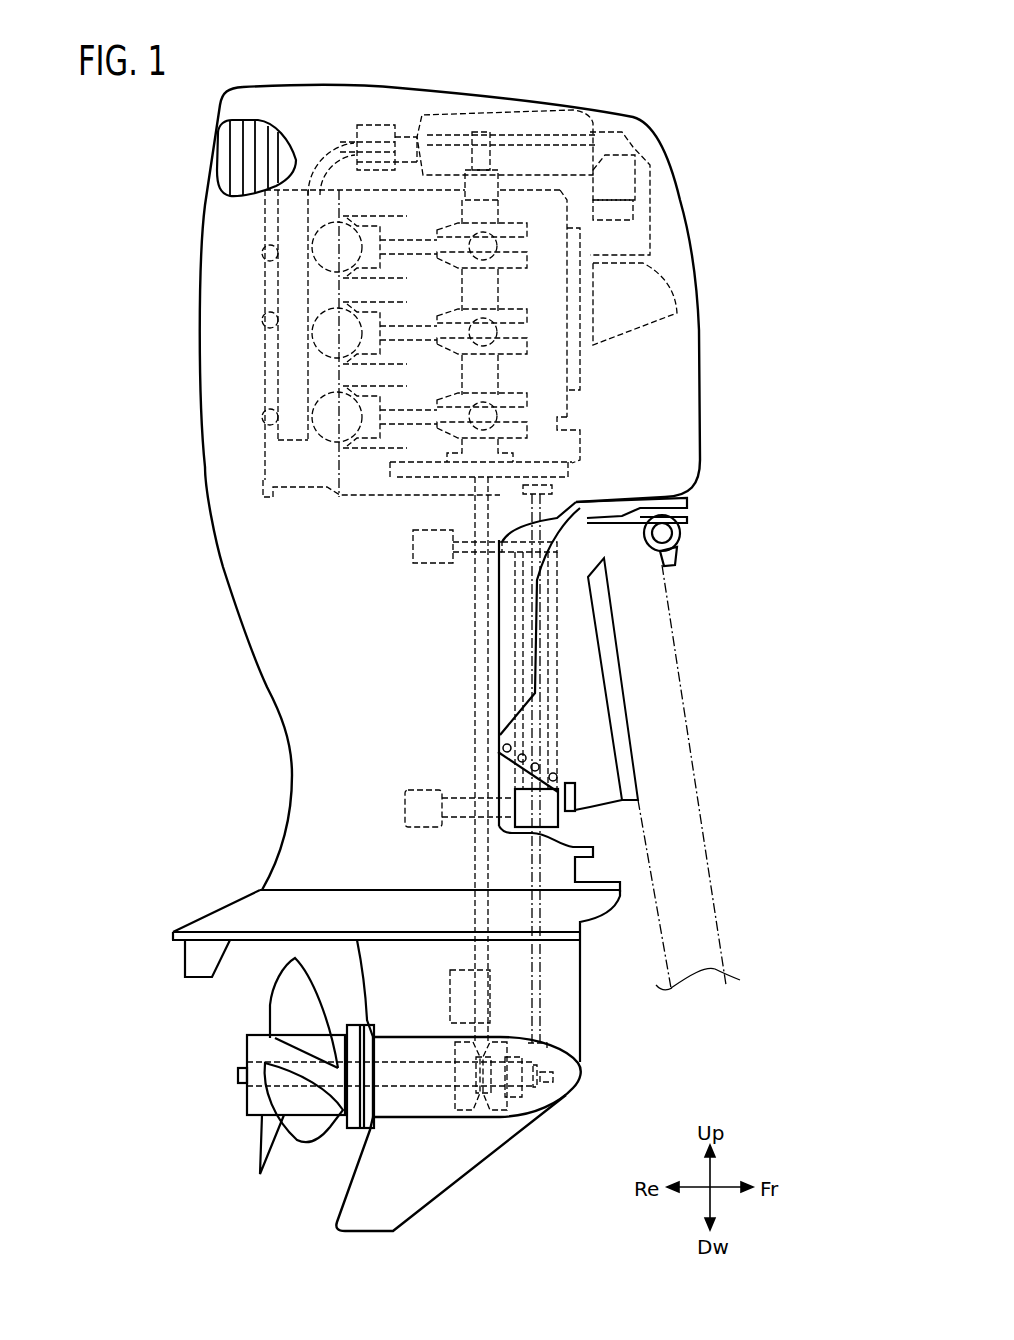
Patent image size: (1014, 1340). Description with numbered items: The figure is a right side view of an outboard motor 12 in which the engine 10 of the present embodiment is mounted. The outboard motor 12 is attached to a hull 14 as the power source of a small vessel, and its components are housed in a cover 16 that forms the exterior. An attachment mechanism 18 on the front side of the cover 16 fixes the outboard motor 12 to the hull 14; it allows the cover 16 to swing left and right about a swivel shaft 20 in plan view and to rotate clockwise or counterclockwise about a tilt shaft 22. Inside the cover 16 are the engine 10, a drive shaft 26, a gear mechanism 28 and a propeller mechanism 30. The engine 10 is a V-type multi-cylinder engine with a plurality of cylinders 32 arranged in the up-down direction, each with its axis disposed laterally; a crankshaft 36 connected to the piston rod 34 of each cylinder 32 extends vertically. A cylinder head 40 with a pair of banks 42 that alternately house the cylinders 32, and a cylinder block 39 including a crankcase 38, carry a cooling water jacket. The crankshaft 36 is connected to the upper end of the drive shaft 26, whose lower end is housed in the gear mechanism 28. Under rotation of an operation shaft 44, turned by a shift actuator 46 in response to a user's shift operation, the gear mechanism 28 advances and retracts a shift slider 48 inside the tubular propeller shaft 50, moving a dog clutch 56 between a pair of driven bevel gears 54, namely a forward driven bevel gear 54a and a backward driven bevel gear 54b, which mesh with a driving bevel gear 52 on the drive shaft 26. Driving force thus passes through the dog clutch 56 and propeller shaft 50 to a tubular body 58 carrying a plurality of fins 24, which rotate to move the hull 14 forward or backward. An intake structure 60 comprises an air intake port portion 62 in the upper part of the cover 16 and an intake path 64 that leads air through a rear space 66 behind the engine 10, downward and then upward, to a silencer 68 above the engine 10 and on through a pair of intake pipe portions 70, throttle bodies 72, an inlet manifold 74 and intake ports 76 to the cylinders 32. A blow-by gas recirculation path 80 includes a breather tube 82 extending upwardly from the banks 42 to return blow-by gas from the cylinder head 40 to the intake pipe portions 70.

The engine 10 is at (430, 487).
The outboard motor 12 is at (659, 65).
The hull 14 is at (711, 870).
The cover 16 is at (174, 195).
The attachment mechanism 18 is at (669, 535).
The swivel shaft 20 is at (560, 698).
The tilt shaft 22 is at (677, 552).
The fins 24 is at (263, 1150).
The drive shaft 26 is at (480, 603).
The gear mechanism 28 is at (516, 1132).
The propeller mechanism 30 is at (283, 1096).
The cylinders 32 is at (306, 228).
The piston rod 34 is at (390, 243).
The crankshaft 36 is at (541, 405).
The crankcase 38 is at (382, 541).
The cylinder block 39 is at (383, 498).
The cylinder head 40 is at (317, 498).
The banks 42 is at (322, 541).
The operation shaft 44 is at (543, 912).
The shift actuator 46 is at (556, 521).
The shift slider 48 is at (562, 1100).
The propeller shaft 50 is at (400, 1090).
The driving bevel gear 52 is at (493, 1036).
The driven bevel gears 54 is at (479, 1133).
The forward driven bevel gear 54a is at (479, 1133).
The backward driven bevel gear 54b is at (497, 1112).
The dog clutch 56 is at (448, 1053).
The tubular body 58 is at (256, 1113).
The intake structure 60 is at (237, 142).
The air intake port portion 62 is at (209, 158).
The intake path 64 is at (222, 450).
The rear space 66 is at (154, 468).
The silencer 68 is at (490, 112).
The intake pipe portions 70 is at (402, 136).
The throttle bodies 72 is at (373, 125).
The inlet manifold 74 is at (267, 386).
The intake ports 76 is at (265, 253).
The blow-by gas recirculation path 80 is at (340, 147).
The breather tube 82 is at (330, 112).